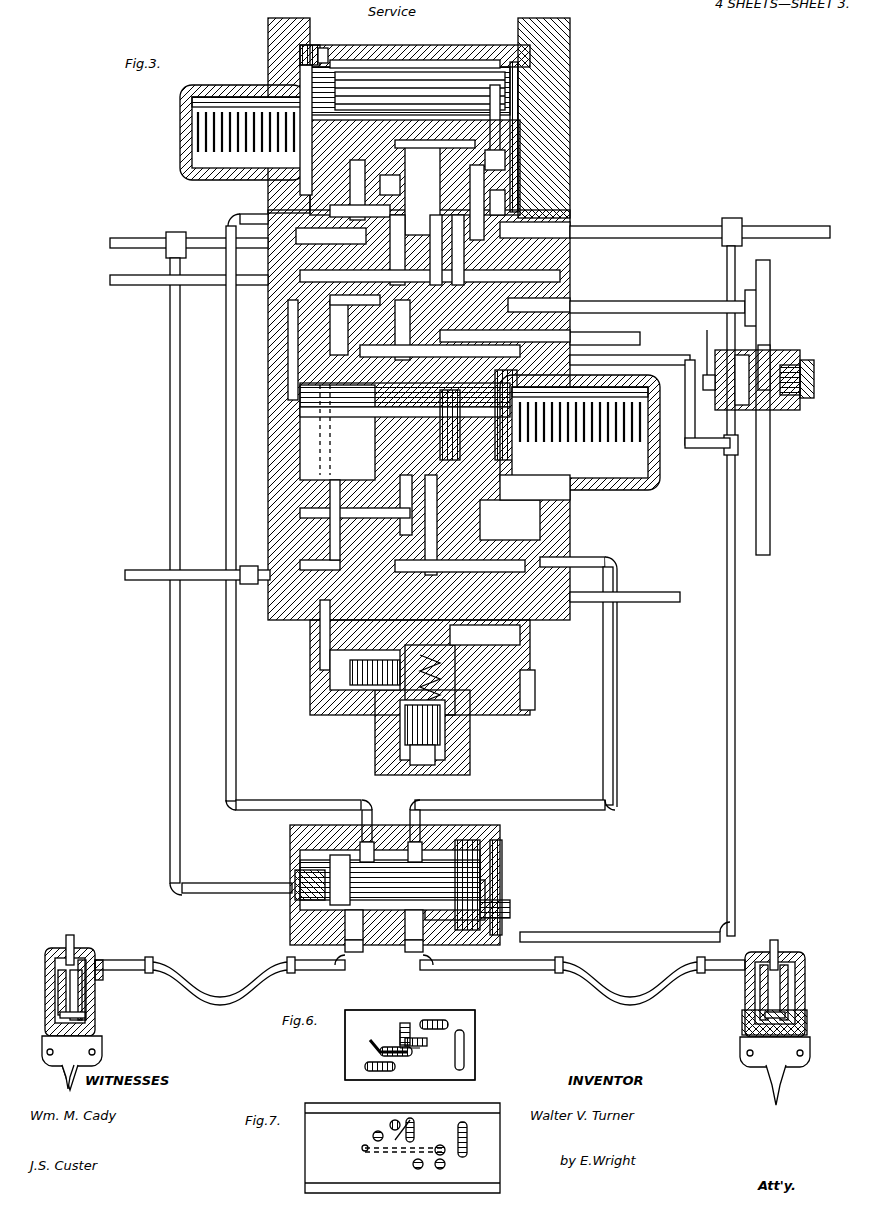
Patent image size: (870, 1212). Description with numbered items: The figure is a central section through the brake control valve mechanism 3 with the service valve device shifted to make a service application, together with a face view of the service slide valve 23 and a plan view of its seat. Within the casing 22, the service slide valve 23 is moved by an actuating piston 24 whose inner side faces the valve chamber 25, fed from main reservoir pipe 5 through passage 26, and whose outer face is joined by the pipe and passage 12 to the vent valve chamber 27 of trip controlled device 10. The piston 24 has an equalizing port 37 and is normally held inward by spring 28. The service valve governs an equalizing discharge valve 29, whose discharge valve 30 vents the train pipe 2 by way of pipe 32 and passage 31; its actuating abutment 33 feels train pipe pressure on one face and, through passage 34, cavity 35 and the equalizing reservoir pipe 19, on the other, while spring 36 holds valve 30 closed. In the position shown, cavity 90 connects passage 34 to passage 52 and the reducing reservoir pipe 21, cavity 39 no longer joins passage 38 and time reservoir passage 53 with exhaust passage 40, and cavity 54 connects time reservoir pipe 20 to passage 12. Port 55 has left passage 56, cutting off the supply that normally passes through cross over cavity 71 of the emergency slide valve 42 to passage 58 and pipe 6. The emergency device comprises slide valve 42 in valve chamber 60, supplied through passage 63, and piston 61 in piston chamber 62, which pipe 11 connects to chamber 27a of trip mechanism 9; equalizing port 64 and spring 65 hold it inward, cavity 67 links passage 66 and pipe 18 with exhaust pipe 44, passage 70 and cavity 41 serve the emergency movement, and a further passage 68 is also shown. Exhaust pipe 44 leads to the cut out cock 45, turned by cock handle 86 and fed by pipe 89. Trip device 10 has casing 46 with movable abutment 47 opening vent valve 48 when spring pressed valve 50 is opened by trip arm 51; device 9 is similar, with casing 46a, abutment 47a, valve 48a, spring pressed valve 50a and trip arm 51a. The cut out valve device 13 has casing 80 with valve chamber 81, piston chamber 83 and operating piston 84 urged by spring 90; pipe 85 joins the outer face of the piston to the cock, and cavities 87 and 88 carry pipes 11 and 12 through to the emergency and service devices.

In FIG. 3, the train pipe 2 is at (770, 290).
In FIG. 3, the brake control valve mechanism 3 is at (426, 366).
In FIG. 3, the main reservoir pipe 5 is at (148, 238).
In FIG. 3, the direct pipe 6 is at (648, 226).
In FIG. 3, the trip governed vent valve device 9 is at (84, 990).
In FIG. 3, the trip governed vent valve device 10 is at (742, 1028).
In FIG. 3, the pipe 11 is at (226, 318).
In FIG. 3, the pipe and passage 12 is at (390, 500).
In FIG. 3, the cut out valve device 13 is at (335, 845).
In FIG. 3, the pipe 18 is at (135, 285).
In FIG. 3, the equalizing reservoir pipe 19 is at (252, 568).
In FIG. 3, the time reservoir pipe 20 is at (615, 340).
In FIG. 3, the reducing reservoir pipe 21 is at (642, 592).
In FIG. 3, the casing 22 is at (455, 52).
In FIG. 3, the service slide valve 23 is at (440, 480).
In FIG. 6, the service slide valve 23 is at (470, 1020).
In FIG. 3, the actuating piston 24 is at (540, 495).
In FIG. 3, the valve chamber 25 is at (300, 460).
In FIG. 3, the passage 26 is at (288, 355).
In FIG. 3, the vent valve chamber 27 is at (780, 975).
In FIG. 3, the chamber 27a is at (95, 960).
In FIG. 3, the spring 28 is at (610, 420).
In FIG. 3, the equalizing discharge valve 29 is at (445, 725).
In FIG. 3, the discharge valve 30 is at (435, 757).
In FIG. 3, the train pipe passage 31 is at (355, 525).
In FIG. 7, the train pipe passage 31 is at (447, 1164).
In FIG. 3, the pipe 32 is at (660, 310).
In FIG. 3, the actuating abutment 33 is at (528, 690).
In FIG. 3, the passage 34 is at (520, 632).
In FIG. 6, the cavity 35 is at (440, 1020).
In FIG. 3, the spring 36 is at (442, 693).
In FIG. 3, the equalizing port 37 is at (520, 405).
In FIG. 7, the passage 38 is at (362, 1148).
In FIG. 6, the cavity 39 is at (378, 1040).
In FIG. 7, the cavity 39 is at (410, 1159).
In FIG. 3, the exhaust passage 40 is at (370, 352).
In FIG. 7, the exhaust passage 40 is at (378, 1142).
In FIG. 3, the cavity 41 is at (390, 170).
In FIG. 3, the emergency slide valve 42 is at (412, 140).
In FIG. 3, the exhaust pipe 44 is at (660, 355).
In FIG. 3, the cut out cock 45 is at (800, 398).
In FIG. 3, the casing 46 is at (788, 998).
In FIG. 3, the valve stem 46a is at (58, 985).
In FIG. 3, the movable abutment 47 is at (758, 998).
In FIG. 3, the valve 47a is at (58, 1010).
In FIG. 3, the vent valve 48 is at (770, 950).
In FIG. 3, the trip valve 48a is at (74, 940).
In FIG. 3, the spring pressed valve 50 is at (786, 1015).
In FIG. 3, the spring seat 50a is at (86, 1015).
In FIG. 3, the trip arm 51 is at (786, 1055).
In FIG. 3, the lever 51a is at (75, 1078).
In FIG. 3, the passage 52 is at (450, 572).
In FIG. 7, the passage 52 is at (442, 1145).
In FIG. 7, the passage 53 is at (420, 1120).
In FIG. 3, the cavity 54 is at (410, 480).
In FIG. 6, the cavity 54 is at (395, 1067).
In FIG. 6, the port 55 is at (465, 1050).
In FIG. 7, the port 55 is at (390, 1124).
In FIG. 3, the passage 56 is at (500, 200).
In FIG. 7, the passage 56 is at (467, 1135).
In FIG. 3, the passage 58 is at (525, 225).
In FIG. 3, the valve chamber 60 is at (500, 85).
In FIG. 3, the actuating piston 61 is at (328, 50).
In FIG. 3, the piston chamber 62 is at (305, 85).
In FIG. 3, the passage 63 is at (380, 60).
In FIG. 3, the equalizing port 64 is at (318, 46).
In FIG. 3, the spring 65 is at (250, 140).
In FIG. 3, the passage 66 is at (460, 256).
In FIG. 3, the cavity 67 is at (440, 140).
In FIG. 3, the passage 68 is at (332, 244).
In FIG. 3, the passage 70 is at (443, 250).
In FIG. 3, the cross over cavity 71 is at (505, 162).
In FIG. 3, the casing 80 is at (478, 838).
In FIG. 3, the valve chamber 81 is at (305, 905).
In FIG. 3, the piston chamber 83 is at (440, 345).
In FIG. 3, the operating piston 84 is at (500, 870).
In FIG. 3, the pipe 85 is at (700, 932).
In FIG. 3, the cock handle 86 is at (705, 340).
In FIG. 3, the cavity 87 is at (358, 952).
In FIG. 3, the cavity 88 is at (415, 952).
In FIG. 3, the pipe 89 is at (730, 270).
In FIG. 3, the cavity 90 is at (460, 450).
In FIG. 6, the cavity 90 is at (415, 1025).